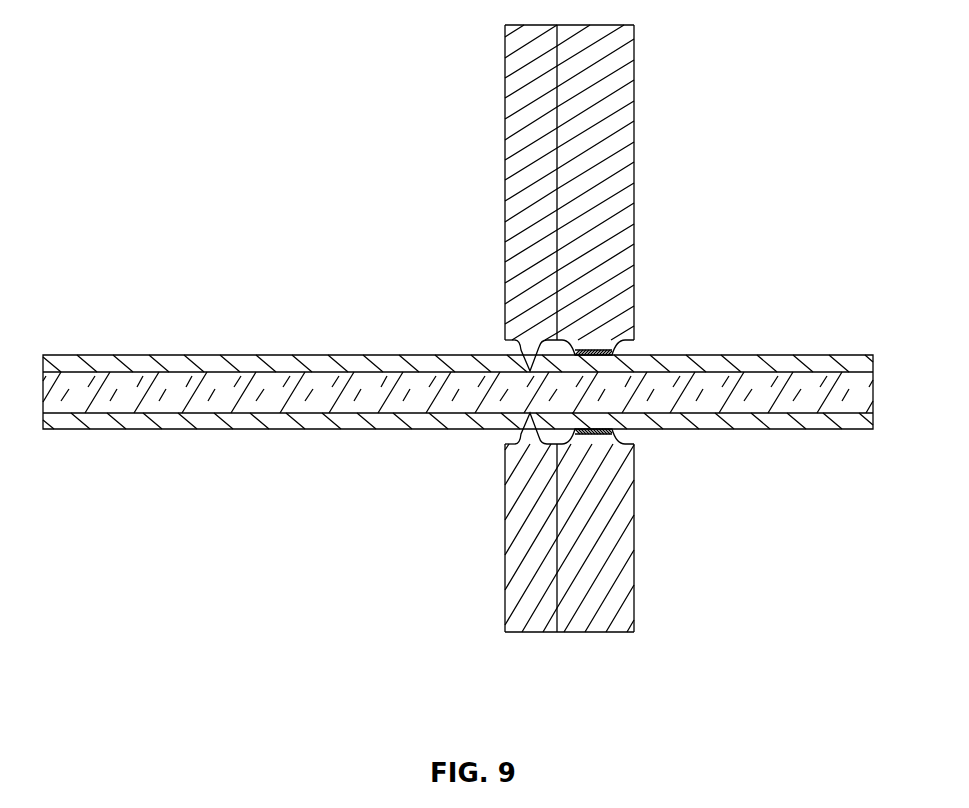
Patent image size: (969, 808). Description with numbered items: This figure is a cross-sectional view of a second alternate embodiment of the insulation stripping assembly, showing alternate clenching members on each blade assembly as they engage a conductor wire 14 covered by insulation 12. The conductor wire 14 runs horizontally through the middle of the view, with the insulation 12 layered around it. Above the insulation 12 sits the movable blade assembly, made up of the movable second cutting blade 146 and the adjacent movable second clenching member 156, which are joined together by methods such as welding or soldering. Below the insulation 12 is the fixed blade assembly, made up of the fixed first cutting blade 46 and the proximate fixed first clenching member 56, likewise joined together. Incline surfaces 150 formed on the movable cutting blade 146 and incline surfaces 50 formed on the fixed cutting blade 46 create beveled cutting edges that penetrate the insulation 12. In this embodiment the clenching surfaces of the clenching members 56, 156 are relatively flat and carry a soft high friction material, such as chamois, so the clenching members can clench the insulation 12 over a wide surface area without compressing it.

The insulation 12 is at (758, 423).
The conductor wire 14 is at (732, 383).
The first cutting blade 46 is at (527, 550).
The incline surfaces 50 is at (505, 433).
The first clenching member 56 is at (622, 548).
The second cutting blade 146 is at (523, 153).
The incline surfaces 150 is at (507, 353).
The second clenching member 156 is at (607, 155).